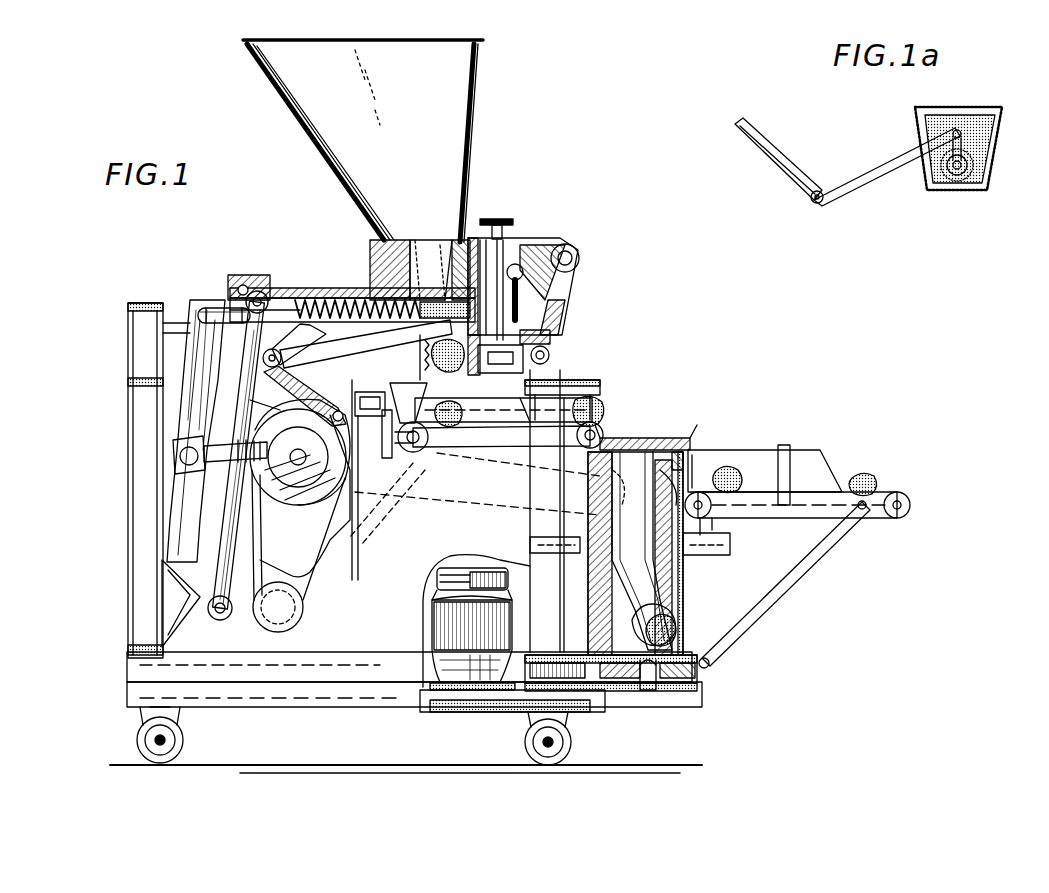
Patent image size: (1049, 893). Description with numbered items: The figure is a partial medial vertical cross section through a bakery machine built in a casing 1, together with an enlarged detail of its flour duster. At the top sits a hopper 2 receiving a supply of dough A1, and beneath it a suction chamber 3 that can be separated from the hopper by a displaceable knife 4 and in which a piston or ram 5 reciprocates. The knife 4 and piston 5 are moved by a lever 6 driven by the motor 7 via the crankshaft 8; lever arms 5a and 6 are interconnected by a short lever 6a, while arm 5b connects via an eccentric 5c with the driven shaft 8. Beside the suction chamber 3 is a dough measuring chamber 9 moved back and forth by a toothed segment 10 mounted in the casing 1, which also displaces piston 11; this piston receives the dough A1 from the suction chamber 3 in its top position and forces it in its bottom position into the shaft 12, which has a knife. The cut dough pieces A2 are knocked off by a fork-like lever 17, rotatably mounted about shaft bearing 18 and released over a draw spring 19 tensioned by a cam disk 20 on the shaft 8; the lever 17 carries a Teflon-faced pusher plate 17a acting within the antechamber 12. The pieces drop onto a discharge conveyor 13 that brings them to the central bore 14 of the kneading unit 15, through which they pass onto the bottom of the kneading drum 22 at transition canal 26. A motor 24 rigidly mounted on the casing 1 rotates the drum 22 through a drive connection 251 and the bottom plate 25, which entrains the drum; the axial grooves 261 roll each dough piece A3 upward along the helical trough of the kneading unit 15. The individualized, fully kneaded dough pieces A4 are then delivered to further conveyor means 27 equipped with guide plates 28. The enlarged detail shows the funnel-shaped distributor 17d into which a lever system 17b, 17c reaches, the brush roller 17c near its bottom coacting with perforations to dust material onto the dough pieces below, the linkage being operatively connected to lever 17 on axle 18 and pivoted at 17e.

In FIG. 1, the casing 1 is at (132, 334).
In FIG. 1, the hopper 2 is at (300, 104).
In FIG. 1, the suction chamber 3 is at (505, 250).
In FIG. 1, the displaceable knife 4 is at (325, 285).
In FIG. 1, the piston or ram 5 is at (372, 262).
In FIG. 1, the lever arm 5a is at (185, 404).
In FIG. 1, the lever arm 5b is at (175, 452).
In FIG. 1, the eccentric 5c is at (345, 505).
In FIG. 1, the lever 6 is at (228, 296).
In FIG. 1, the short lever 6a is at (200, 310).
In FIG. 1, the motor 7 is at (212, 610).
In FIG. 1, the crankshaft 8 is at (290, 462).
In FIG. 1, the dough measuring chamber 9 is at (572, 300).
In FIG. 1, the toothed segment 10 is at (570, 320).
In FIG. 1, the piston 11 is at (570, 400).
In FIG. 1, the shaft 12 is at (460, 445).
In FIG. 1, the discharge conveyor 13 is at (497, 448).
In FIG. 1, the central bore 14 is at (622, 455).
In FIG. 1, the kneading unit 15 is at (668, 460).
In FIG. 1, the lever 17 is at (351, 373).
In FIG. 1A, the lever 17 is at (760, 152).
In FIG. 1, the pusher plate 17a is at (426, 252).
In FIG. 1A, the lever system 17b is at (880, 175).
In FIG. 1A, the brush roller 17c is at (990, 163).
In FIG. 1A, the distributor 17d is at (915, 112).
In FIG. 1A, the pivot pin 17e is at (965, 132).
In FIG. 1, the shaft bearing 18 is at (280, 290).
In FIG. 1, the draw spring 19 is at (389, 480).
In FIG. 1, the cam disk 20 is at (298, 551).
In FIG. 1, the kneading drum 22 is at (684, 572).
In FIG. 1, the motor 24 is at (430, 616).
In FIG. 1, the bottom plate 25 is at (716, 655).
In FIG. 1, the drive connection 251 is at (672, 690).
In FIG. 1, the transition canal 26 is at (685, 625).
In FIG. 1, the trough / grooves 261 is at (600, 507).
In FIG. 1, the conveyor means 27 is at (820, 508).
In FIG. 1, the guide plates 28 is at (810, 452).
In FIG. 1, the dough A1 is at (415, 350).
In FIG. 1, the dough pieces A2 is at (604, 425).
In FIG. 1, the dough piece A3 is at (678, 635).
In FIG. 1, the kneaded dough pieces A4 is at (730, 465).